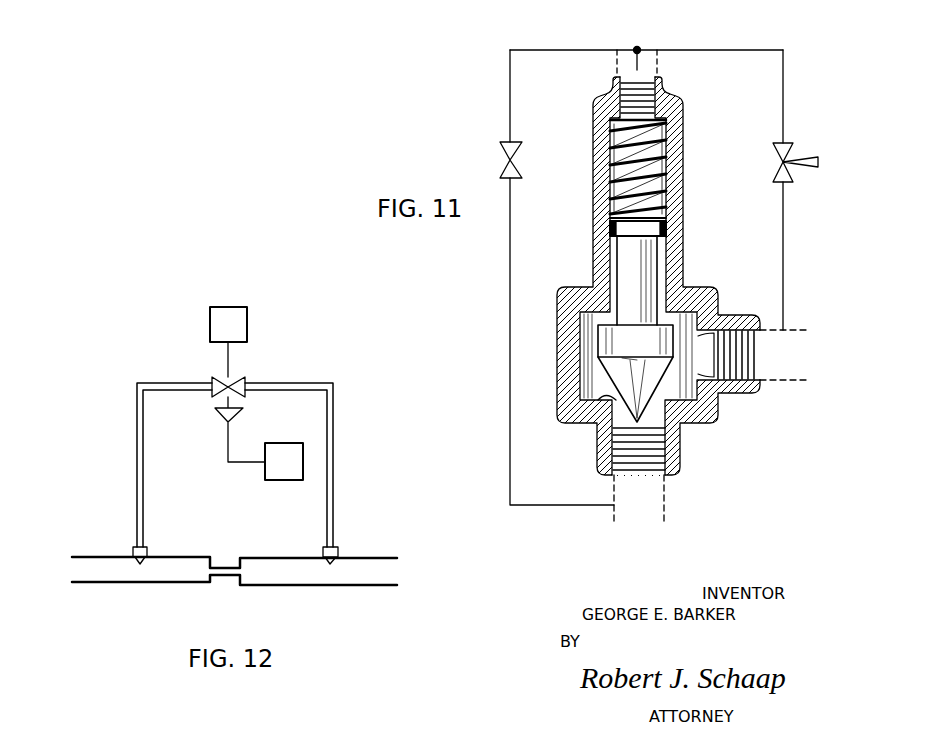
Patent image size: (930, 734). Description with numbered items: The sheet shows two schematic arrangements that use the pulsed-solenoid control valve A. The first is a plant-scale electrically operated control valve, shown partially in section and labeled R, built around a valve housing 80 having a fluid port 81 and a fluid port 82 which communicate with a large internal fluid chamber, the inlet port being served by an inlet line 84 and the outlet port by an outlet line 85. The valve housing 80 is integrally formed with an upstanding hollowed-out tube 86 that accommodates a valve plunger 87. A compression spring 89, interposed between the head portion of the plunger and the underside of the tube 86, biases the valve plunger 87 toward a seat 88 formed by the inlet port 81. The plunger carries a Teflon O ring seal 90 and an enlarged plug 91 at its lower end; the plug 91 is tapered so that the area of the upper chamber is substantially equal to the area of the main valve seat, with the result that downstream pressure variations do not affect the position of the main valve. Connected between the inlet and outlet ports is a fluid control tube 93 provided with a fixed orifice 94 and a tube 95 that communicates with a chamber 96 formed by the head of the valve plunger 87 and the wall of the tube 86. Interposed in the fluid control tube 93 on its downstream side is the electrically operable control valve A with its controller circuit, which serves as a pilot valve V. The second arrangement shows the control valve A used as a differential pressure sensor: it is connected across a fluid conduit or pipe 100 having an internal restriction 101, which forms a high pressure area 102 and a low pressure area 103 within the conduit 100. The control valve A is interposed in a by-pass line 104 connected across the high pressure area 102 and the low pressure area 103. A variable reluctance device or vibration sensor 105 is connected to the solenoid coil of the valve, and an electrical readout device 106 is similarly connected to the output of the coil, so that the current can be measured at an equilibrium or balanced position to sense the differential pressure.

In FIG. 11, the valve housing 80 is at (592, 258).
In FIG. 11, the fluid port 81 is at (659, 478).
In FIG. 11, the fluid port 82 is at (588, 383).
In FIG. 11, the inlet line 84 is at (614, 519).
In FIG. 11, the outlet line 85 is at (785, 386).
In FIG. 11, the upstanding hollowed-out tube 86 is at (683, 158).
In FIG. 11, the valve plunger 87 is at (651, 287).
In FIG. 11, the seat 88 is at (606, 398).
In FIG. 11, the compression spring 89 is at (612, 134).
In FIG. 11, the Teflon O ring seal 90 is at (663, 230).
In FIG. 11, the enlarged plug 91 is at (618, 356).
In FIG. 11, the fluid control tube 93 is at (510, 272).
In FIG. 11, the fixed orifice 94 is at (500, 166).
In FIG. 11, the tube 95 is at (642, 62).
In FIG. 11, the chamber 96 is at (613, 176).
In FIG. 11, the relief valve R is at (692, 112).
In FIG. 11, the pilot valve V is at (790, 170).
In FIG. 12, the fluid conduit or pipe 100 is at (345, 586).
In FIG. 12, the internal restriction 101 is at (228, 572).
In FIG. 12, the high pressure area 102 is at (78, 569).
In FIG. 12, the low pressure area 103 is at (395, 576).
In FIG. 12, the by-pass line 104 is at (333, 438).
In FIG. 12, the variable reluctance device or vibration sensor 105 is at (245, 324).
In FIG. 12, the electrical readout device 106 is at (265, 478).
In FIG. 12, the control valve A is at (237, 378).